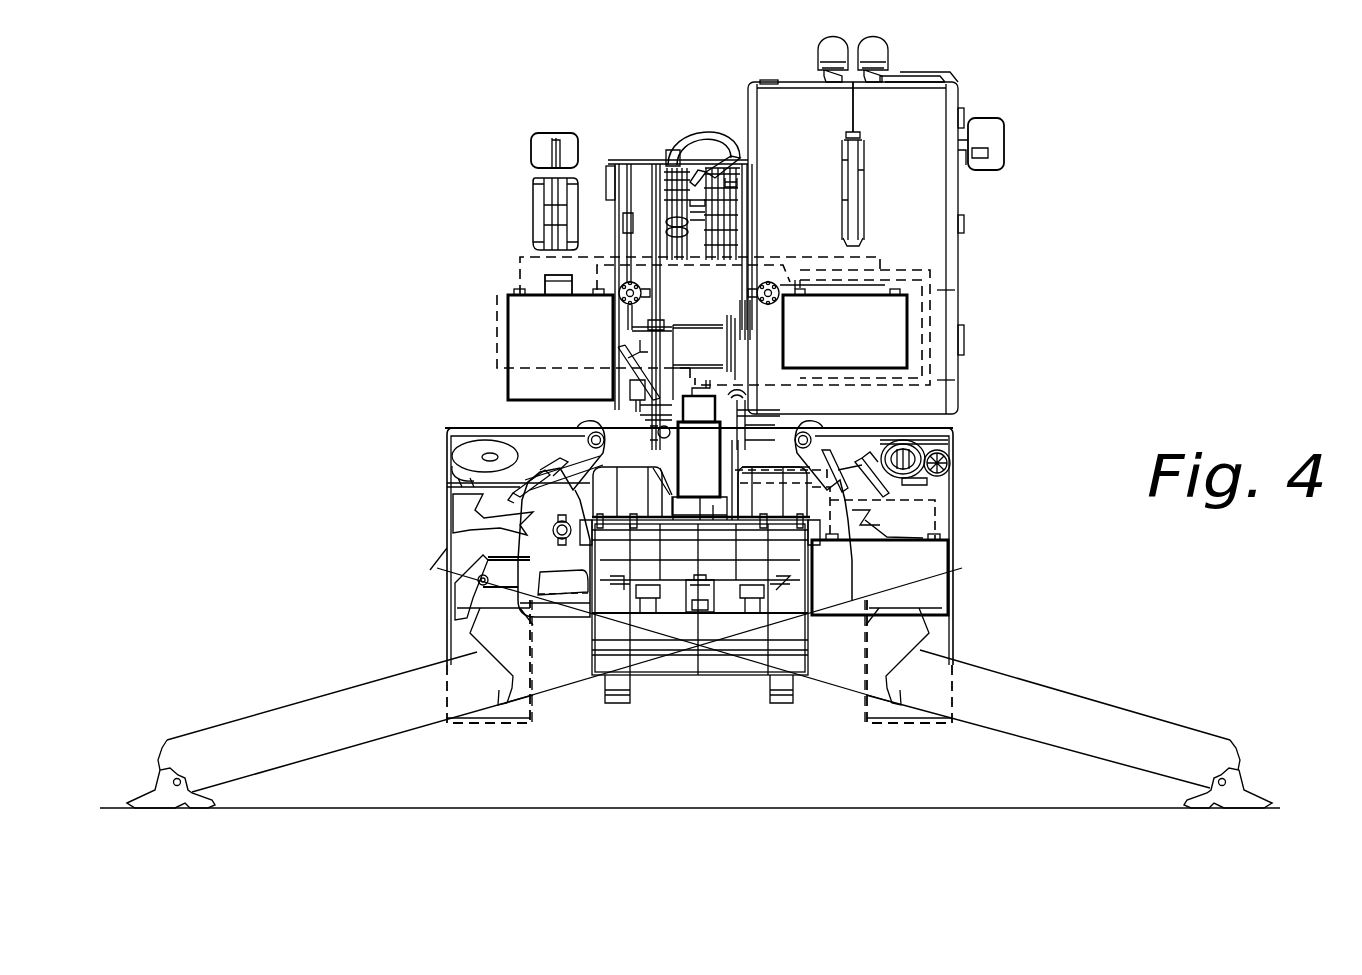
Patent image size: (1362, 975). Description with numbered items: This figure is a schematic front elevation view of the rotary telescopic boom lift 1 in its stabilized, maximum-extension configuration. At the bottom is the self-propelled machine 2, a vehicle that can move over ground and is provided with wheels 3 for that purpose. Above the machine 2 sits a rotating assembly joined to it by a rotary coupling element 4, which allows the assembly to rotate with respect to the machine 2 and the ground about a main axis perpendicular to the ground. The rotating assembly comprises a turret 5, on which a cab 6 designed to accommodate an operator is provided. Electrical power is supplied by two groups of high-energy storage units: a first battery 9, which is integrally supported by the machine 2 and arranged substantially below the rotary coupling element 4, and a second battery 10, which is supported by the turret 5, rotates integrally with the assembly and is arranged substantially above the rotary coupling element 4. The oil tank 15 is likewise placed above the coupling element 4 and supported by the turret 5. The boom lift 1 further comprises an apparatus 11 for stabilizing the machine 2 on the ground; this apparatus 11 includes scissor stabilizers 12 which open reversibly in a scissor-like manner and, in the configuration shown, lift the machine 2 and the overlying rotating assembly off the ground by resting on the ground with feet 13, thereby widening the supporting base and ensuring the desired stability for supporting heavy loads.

The rotary telescopic boom lift 1 is at (302, 267).
The self-propelled machine 2 is at (446, 500).
The wheels 3 is at (510, 722).
The rotary coupling element 4 is at (698, 380).
The turret 5 is at (610, 176).
The cab 6 is at (933, 202).
The first battery 9 is at (935, 566).
The second battery 10 is at (497, 335).
The stabilizing apparatus 11 is at (1010, 676).
The scissor stabilizers 12 is at (390, 718).
The feet 13 is at (170, 786).
The oil tank 15 is at (530, 316).